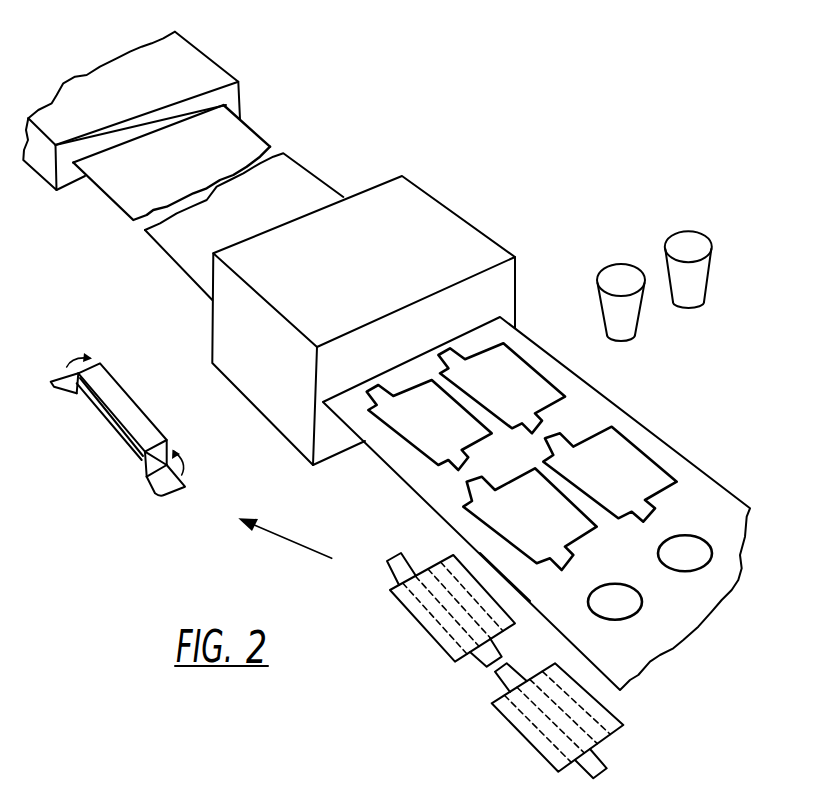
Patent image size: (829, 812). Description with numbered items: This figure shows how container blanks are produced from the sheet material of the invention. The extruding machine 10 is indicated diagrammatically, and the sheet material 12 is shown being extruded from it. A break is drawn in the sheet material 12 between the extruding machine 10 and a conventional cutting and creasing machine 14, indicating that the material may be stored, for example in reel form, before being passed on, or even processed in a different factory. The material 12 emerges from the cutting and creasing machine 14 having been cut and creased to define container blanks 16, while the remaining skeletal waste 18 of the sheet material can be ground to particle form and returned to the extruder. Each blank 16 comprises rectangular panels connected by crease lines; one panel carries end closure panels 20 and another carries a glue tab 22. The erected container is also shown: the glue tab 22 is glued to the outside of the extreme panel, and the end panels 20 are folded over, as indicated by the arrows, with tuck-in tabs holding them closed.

The extruding machine 10 is at (212, 70).
The sheet material 12 is at (250, 135).
The cutting and creasing machine 14 is at (477, 243).
The container blanks 16 is at (505, 642).
The skeletal waste 18 is at (529, 336).
The end closure panels 20 is at (415, 560).
The glue tab 22 is at (501, 595).